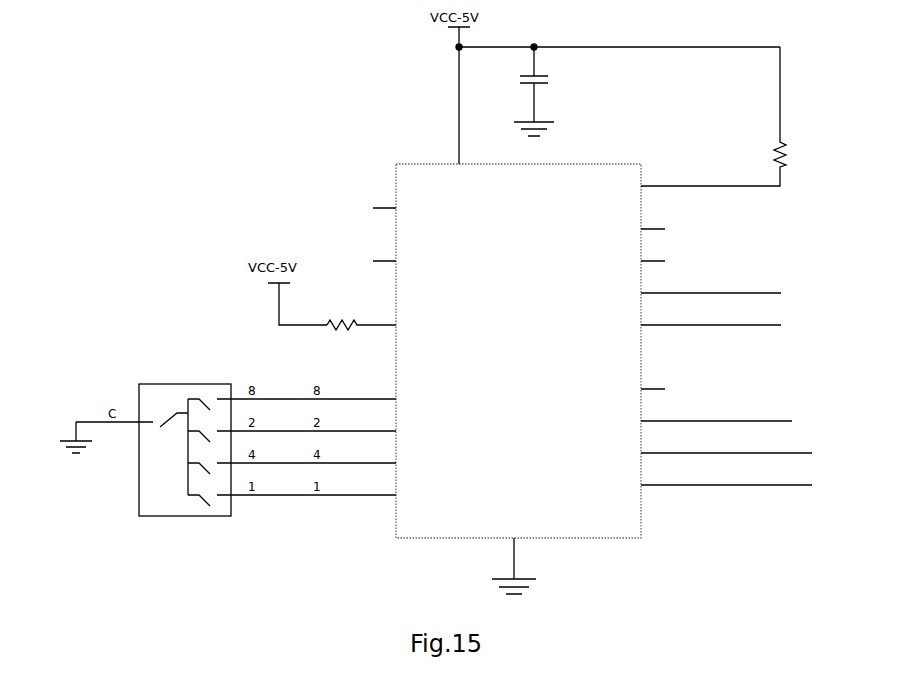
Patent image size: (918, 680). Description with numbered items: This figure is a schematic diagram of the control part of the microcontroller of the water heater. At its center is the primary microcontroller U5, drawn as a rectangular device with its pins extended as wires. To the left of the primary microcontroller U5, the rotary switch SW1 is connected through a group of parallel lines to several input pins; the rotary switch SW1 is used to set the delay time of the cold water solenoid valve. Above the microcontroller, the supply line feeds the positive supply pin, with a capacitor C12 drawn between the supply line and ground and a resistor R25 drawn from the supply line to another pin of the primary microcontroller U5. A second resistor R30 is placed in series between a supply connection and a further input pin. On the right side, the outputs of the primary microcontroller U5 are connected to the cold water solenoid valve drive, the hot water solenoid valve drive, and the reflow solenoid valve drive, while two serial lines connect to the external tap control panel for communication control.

The primary microcontroller U5 is at (586, 364).
The capacitor C12 is at (547, 91).
The resistor R25 is at (729, 116).
The resistor R30 is at (357, 317).
The rotary switch SW1 is at (180, 452).